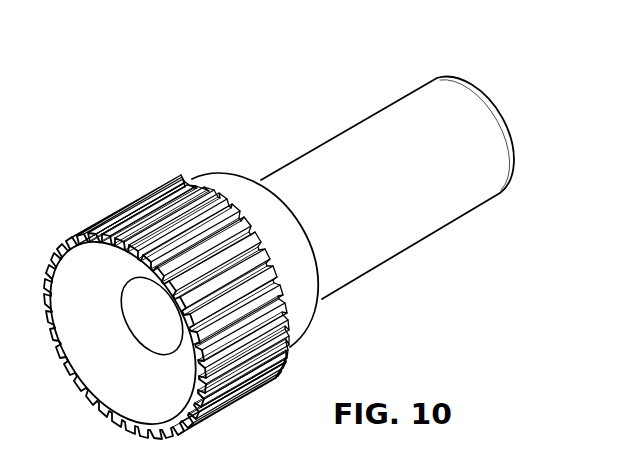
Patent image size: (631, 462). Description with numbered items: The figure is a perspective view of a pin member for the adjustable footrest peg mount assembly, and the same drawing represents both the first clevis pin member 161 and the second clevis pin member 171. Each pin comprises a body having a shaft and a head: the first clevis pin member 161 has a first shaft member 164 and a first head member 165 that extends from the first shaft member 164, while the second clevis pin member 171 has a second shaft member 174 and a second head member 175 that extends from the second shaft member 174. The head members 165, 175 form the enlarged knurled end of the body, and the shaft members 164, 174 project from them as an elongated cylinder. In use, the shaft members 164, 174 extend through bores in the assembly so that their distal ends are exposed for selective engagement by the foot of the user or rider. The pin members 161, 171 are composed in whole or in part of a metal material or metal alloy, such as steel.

The first clevis pin member 161 is at (127, 93).
The second clevis pin member 171 is at (277, 263).
The first head member 165 is at (147, 202).
The second head member 175 is at (166, 307).
The first shaft member 164 is at (420, 202).
The second shaft member 174 is at (387, 188).